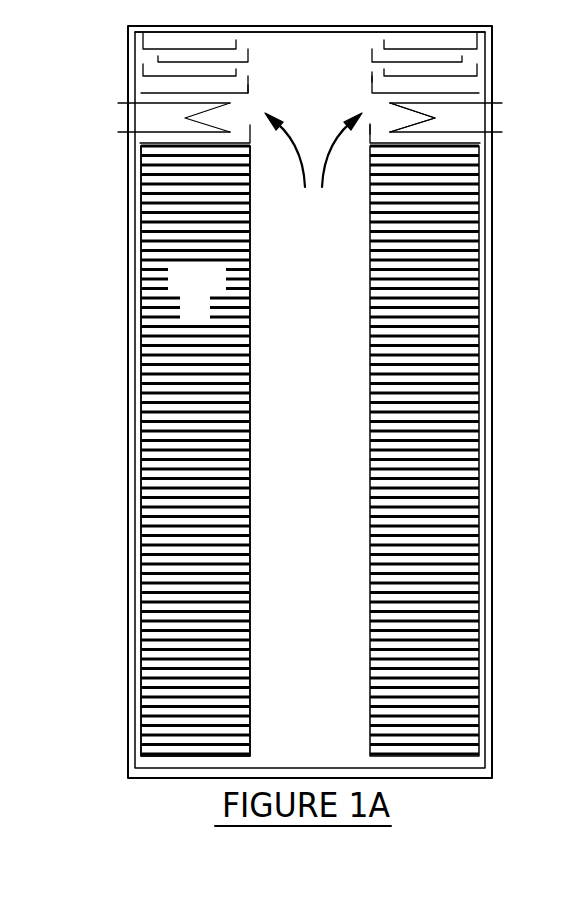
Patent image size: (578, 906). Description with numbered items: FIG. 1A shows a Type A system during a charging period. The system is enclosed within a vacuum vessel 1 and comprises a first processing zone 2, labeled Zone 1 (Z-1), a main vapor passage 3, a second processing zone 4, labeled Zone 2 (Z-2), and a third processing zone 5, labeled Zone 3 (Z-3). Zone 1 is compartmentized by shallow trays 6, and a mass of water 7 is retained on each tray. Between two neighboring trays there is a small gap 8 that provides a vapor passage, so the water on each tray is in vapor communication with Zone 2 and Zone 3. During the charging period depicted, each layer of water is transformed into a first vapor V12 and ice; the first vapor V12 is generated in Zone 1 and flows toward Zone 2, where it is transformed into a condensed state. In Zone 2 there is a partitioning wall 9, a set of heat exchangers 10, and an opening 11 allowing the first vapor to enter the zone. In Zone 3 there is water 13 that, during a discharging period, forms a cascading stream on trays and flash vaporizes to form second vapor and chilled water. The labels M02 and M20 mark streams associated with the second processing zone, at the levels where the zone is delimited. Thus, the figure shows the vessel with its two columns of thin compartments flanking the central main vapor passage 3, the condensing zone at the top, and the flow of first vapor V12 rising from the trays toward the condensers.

The vacuum vessel 1 is at (494, 331).
The first processing zone 2 is at (222, 289).
The main vapor passage 3 is at (322, 314).
The second processing zone 4 is at (310, 122).
The third processing zone 5 is at (487, 78).
The shallow trays 6 is at (252, 438).
The mass of water 7 is at (242, 398).
The small gap 8 is at (253, 372).
The partitioning wall 9 is at (371, 129).
The heat exchangers 10 is at (457, 115).
The opening 11 is at (249, 84).
The water 13 is at (371, 77).
The Zone 1 Z-1 is at (195, 451).
The Zone 2 Z-2 is at (162, 115).
The Zone 3 Z-3 is at (473, 55).
The mass flow M02 is at (336, 105).
The mass flow M20 is at (335, 139).
The first vapor V12 is at (313, 147).